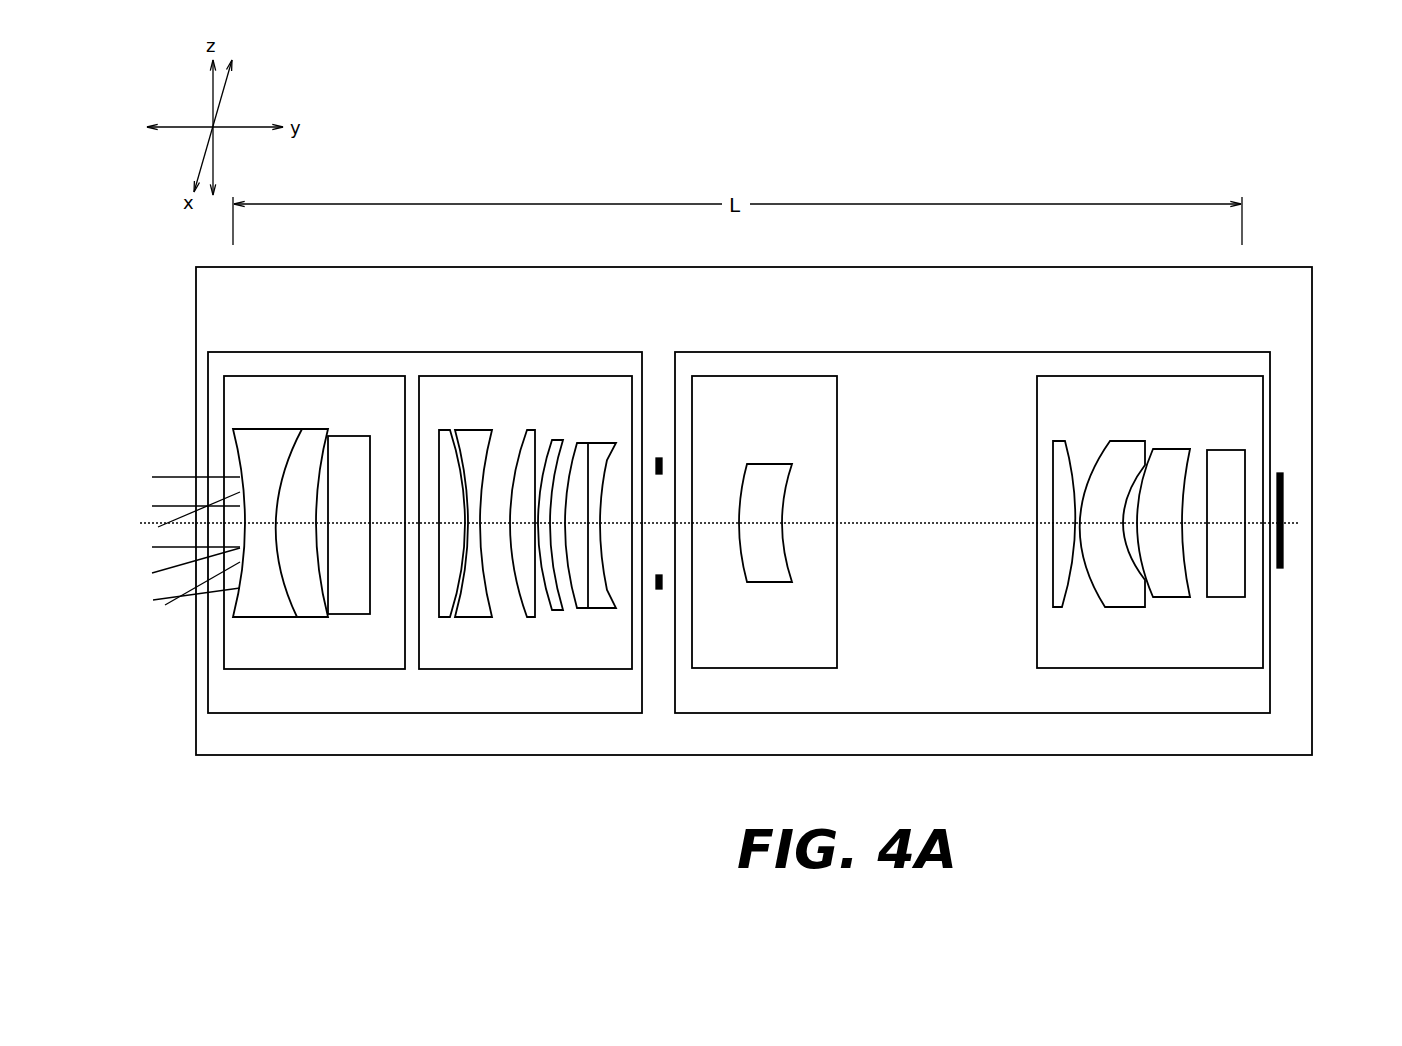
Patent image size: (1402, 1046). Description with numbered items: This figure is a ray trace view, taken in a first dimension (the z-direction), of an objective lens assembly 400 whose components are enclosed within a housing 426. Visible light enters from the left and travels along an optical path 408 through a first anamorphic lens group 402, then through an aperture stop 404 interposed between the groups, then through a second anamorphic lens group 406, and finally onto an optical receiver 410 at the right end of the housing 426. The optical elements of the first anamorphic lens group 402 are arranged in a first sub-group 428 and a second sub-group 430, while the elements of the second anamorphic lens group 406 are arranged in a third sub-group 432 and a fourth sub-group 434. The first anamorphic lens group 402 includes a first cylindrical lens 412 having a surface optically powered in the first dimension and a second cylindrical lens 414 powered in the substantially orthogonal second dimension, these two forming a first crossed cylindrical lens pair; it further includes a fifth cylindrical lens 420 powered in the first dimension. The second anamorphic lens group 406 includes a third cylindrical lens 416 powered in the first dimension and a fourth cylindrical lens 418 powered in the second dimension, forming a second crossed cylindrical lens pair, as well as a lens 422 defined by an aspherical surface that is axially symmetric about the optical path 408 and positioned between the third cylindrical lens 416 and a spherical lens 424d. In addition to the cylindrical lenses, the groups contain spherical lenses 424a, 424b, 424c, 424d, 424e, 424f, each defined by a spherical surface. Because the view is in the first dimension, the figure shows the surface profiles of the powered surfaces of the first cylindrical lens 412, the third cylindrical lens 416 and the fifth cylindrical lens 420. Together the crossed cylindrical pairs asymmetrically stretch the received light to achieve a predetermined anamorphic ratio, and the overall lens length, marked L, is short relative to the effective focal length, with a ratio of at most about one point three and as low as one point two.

The objective lens assembly 400 is at (917, 150).
The first anamorphic lens group 402 is at (362, 348).
The aperture stop 404 is at (665, 458).
The second anamorphic lens group 406 is at (968, 350).
The optical path 408 is at (867, 523).
The optical receiver 410 is at (1283, 562).
The first cylindrical lens 412 is at (265, 618).
The second cylindrical lens 414 is at (351, 614).
The third cylindrical lens 416 is at (1060, 605).
The fourth cylindrical lens 418 is at (1217, 597).
The fifth cylindrical lens 420 is at (473, 430).
The lens defined by an aspherical surface 422 is at (772, 582).
The spherical lens 424a is at (445, 617).
The spherical lens 424b is at (527, 617).
The spherical lens 424c is at (556, 440).
The spherical lens 424d is at (595, 443).
The spherical lens 424e is at (1110, 441).
The spherical lens 424f is at (1183, 449).
The housing 426 is at (1298, 264).
The first sub-group 428 is at (258, 377).
The second sub-group 430 is at (432, 377).
The third sub-group 432 is at (818, 376).
The fourth sub-group 434 is at (1065, 377).